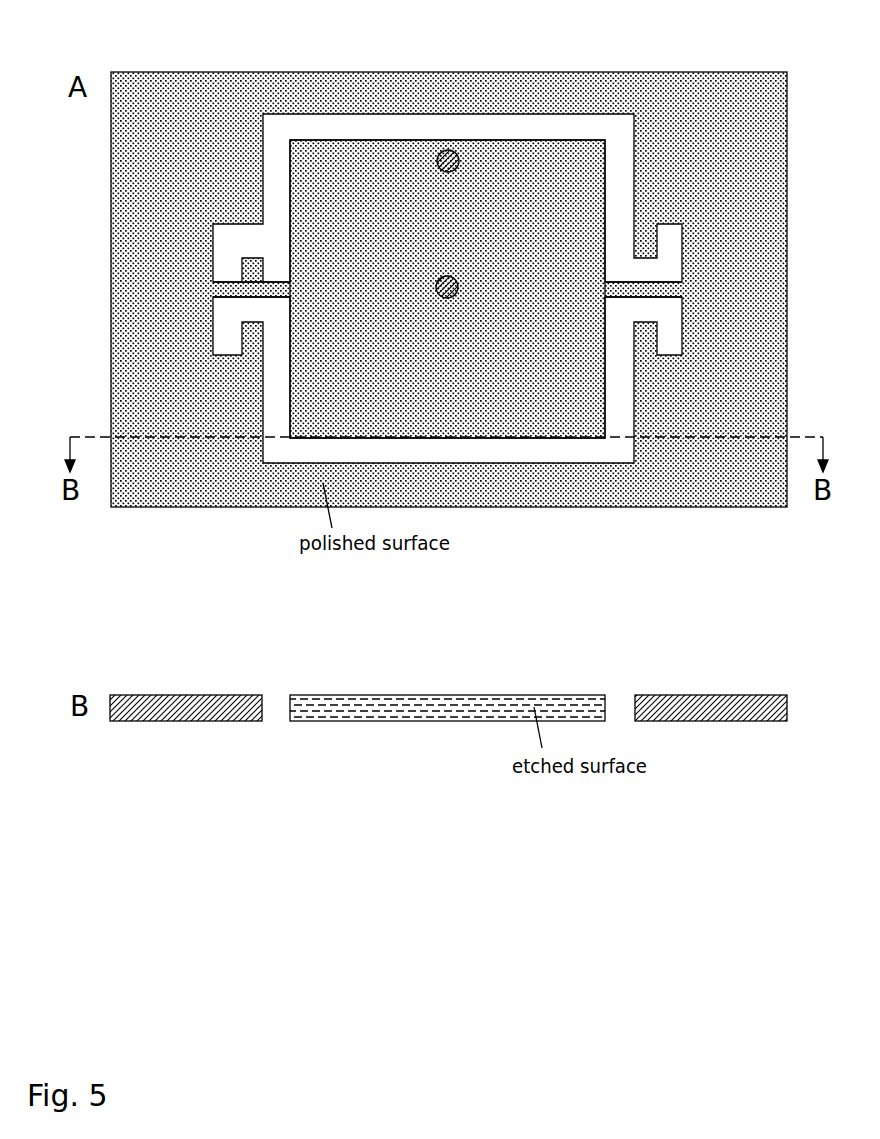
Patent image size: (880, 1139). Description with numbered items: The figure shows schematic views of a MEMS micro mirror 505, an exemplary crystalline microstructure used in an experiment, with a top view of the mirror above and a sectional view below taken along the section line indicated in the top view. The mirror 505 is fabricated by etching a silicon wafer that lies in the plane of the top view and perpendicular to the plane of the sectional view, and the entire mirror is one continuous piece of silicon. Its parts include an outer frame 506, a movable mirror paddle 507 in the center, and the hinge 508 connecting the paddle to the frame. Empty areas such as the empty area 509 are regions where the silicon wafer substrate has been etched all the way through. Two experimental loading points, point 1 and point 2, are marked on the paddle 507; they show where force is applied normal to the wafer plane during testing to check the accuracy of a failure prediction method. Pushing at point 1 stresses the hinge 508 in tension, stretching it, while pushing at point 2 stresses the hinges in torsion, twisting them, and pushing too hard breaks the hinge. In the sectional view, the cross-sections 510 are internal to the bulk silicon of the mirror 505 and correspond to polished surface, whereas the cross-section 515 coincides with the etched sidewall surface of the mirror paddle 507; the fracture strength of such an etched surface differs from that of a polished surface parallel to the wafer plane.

The MEMS micro mirror 505 is at (198, 142).
The frame 506 is at (517, 93).
The movable mirror paddle 507 is at (572, 167).
The hinge 508 is at (665, 290).
The empty area 509 is at (279, 127).
The cross-sections 510 is at (183, 702).
The cross-section 515 is at (447, 705).
The loading point 1 is at (461, 289).
The loading point 2 is at (461, 162).